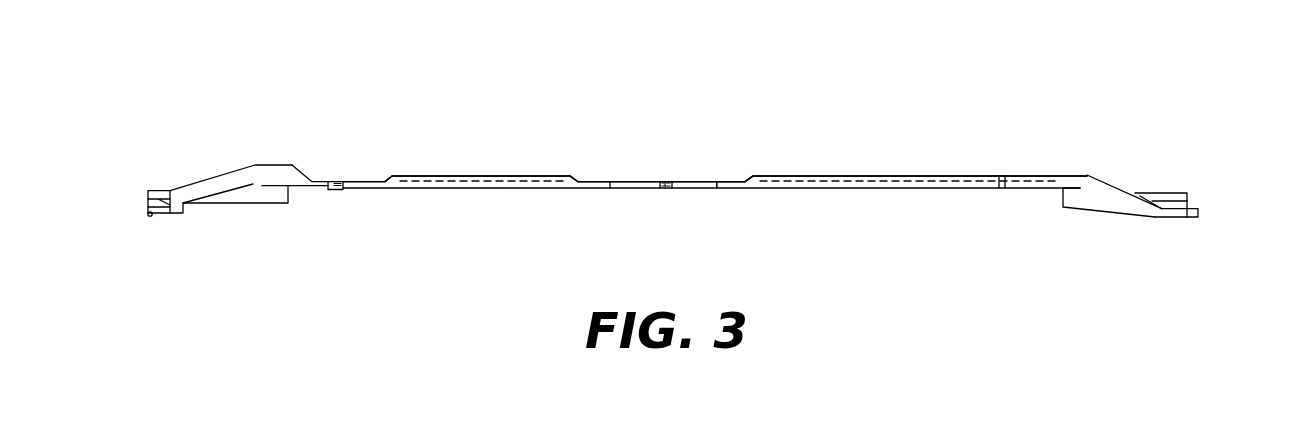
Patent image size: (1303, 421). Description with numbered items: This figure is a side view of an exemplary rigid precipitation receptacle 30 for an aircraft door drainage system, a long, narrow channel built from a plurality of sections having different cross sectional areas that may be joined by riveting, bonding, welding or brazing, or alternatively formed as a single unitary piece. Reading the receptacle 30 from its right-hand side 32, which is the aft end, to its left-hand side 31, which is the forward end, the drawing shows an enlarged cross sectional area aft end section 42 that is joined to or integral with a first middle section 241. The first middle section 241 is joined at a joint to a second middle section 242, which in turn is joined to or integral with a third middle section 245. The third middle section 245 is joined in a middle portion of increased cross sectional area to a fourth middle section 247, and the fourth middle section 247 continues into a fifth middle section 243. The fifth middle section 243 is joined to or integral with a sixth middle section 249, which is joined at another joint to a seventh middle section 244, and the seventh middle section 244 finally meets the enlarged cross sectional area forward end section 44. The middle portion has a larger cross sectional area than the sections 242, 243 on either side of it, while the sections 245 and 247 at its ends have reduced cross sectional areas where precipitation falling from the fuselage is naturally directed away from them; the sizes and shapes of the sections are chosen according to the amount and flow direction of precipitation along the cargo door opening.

The rigid precipitation receptacle 30 is at (950, 70).
The left-hand side 31 is at (114, 187).
The right-hand side 32 is at (1208, 170).
The aft end section 42 is at (1098, 188).
The forward end section 44 is at (221, 175).
The first middle section 241 is at (1015, 177).
The second middle section 242 is at (787, 181).
The fifth middle section 243 is at (402, 178).
The seventh middle section 244 is at (315, 179).
The third middle section 245 is at (725, 182).
The fourth middle section 247 is at (593, 182).
The sixth middle section 249 is at (346, 180).